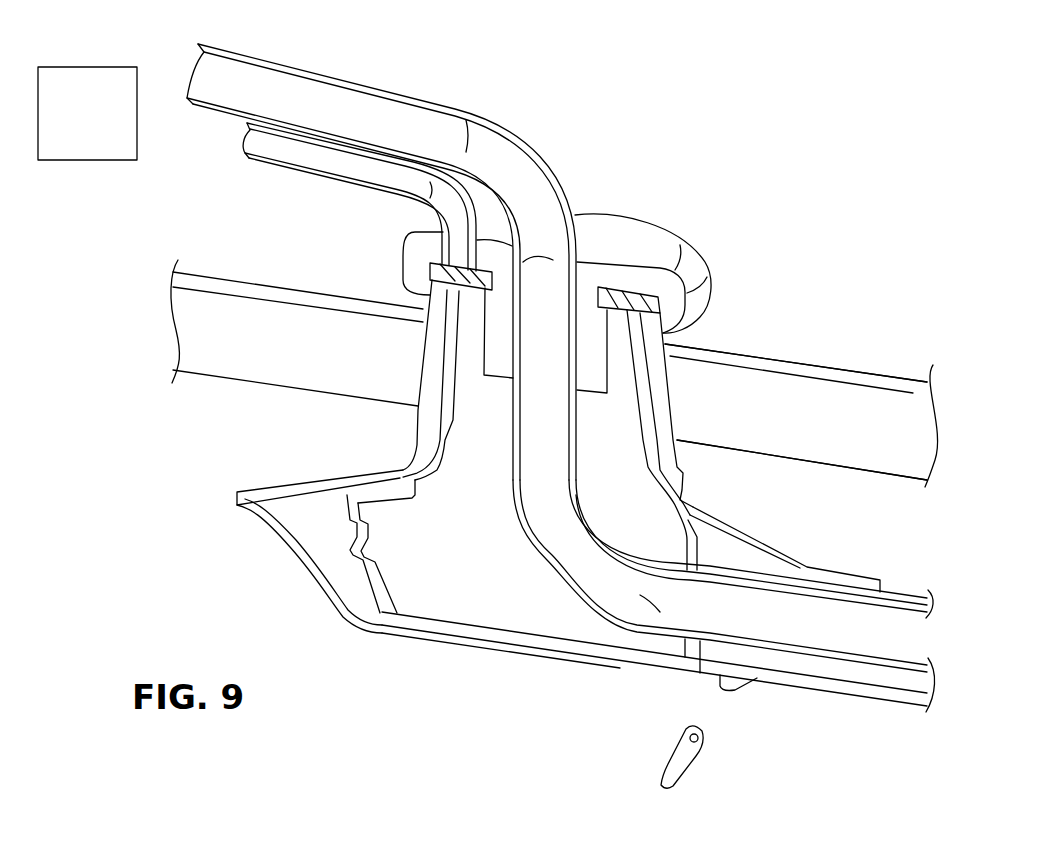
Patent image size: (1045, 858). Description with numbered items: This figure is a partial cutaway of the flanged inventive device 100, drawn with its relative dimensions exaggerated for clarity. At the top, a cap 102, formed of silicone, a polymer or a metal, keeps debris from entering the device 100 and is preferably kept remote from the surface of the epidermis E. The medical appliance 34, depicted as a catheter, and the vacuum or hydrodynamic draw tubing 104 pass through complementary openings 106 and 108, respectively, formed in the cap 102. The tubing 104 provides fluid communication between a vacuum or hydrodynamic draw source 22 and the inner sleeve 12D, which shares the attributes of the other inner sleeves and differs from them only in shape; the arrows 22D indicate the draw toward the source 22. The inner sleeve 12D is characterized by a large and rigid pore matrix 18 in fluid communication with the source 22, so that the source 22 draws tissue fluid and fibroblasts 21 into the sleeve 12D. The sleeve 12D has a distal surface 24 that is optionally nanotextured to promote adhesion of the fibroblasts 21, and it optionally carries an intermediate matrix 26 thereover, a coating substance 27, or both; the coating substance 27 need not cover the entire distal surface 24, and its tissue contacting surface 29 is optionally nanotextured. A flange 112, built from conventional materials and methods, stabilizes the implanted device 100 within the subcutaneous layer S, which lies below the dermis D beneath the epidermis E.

The medical appliance 34 is at (200, 65).
The vacuum or hydrodynamic draw source 22 is at (98, 128).
The flow direction toward the draw source 22D is at (547, 654).
The vacuum or hydrodynamic draw tubing 104 is at (245, 145).
The opening 108 is at (440, 233).
The cap 102 is at (406, 266).
The opening 106 is at (577, 262).
The inventive device 100 is at (767, 243).
The epidermis E is at (872, 380).
The dash panel D is at (886, 446).
The subcutaneous layer S is at (888, 509).
The tissue contacting surface 29 is at (413, 407).
The coating substance 27 is at (420, 443).
The distal surface 24 is at (397, 463).
The flange 112 is at (255, 517).
The intermediate matrix 26 is at (388, 620).
The pore matrix 18 is at (513, 608).
The inner sleeve 12D is at (613, 647).
The fibroblasts 21 is at (702, 747).